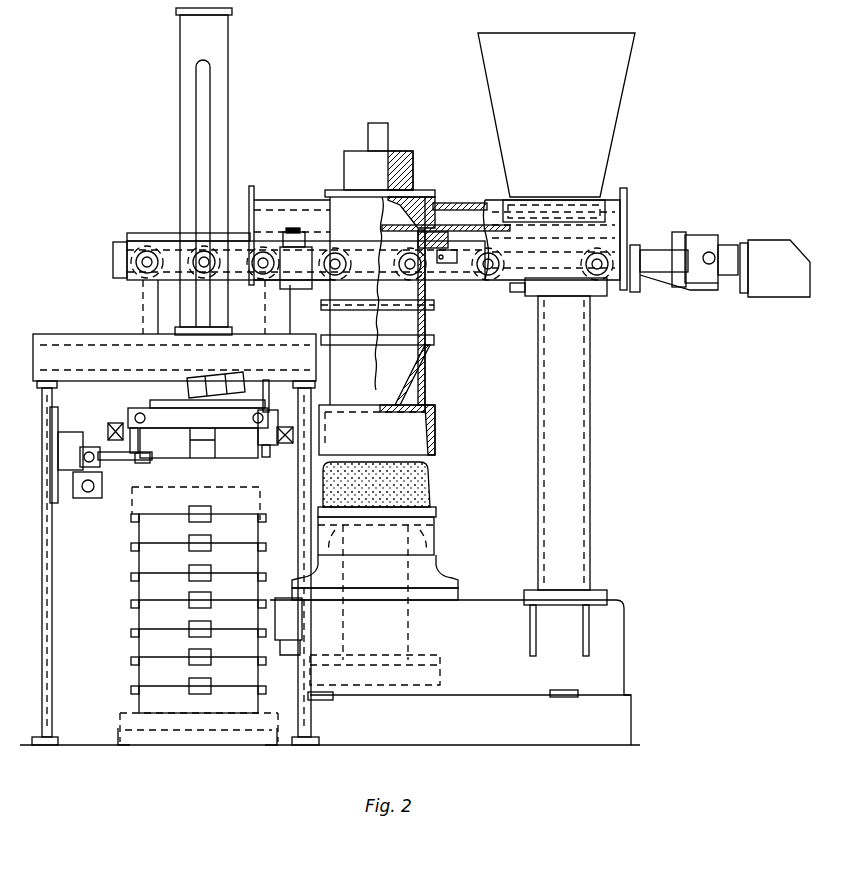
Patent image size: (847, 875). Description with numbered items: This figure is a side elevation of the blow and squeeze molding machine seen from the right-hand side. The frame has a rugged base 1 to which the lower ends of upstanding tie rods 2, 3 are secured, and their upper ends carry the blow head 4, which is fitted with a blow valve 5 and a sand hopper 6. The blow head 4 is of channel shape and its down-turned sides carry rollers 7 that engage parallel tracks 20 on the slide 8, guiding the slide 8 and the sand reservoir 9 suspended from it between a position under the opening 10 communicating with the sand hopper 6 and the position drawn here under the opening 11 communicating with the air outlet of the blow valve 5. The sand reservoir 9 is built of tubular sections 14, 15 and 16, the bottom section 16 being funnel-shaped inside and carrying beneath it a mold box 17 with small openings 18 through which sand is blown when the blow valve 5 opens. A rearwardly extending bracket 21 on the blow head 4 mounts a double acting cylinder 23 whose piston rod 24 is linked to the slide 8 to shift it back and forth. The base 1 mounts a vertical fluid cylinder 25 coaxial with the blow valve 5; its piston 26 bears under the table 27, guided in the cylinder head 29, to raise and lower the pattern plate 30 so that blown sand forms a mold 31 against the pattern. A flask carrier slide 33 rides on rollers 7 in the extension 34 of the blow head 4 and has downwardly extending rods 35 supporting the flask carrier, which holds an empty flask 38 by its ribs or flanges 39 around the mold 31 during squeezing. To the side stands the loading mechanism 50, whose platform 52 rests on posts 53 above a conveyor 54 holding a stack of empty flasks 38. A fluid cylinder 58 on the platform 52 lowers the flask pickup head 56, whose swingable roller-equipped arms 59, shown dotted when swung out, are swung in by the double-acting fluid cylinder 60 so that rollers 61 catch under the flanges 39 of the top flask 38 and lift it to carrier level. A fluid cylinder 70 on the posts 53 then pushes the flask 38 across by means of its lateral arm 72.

The base 1 is at (465, 722).
The tie rods 2 is at (290, 312).
The tie rods 3 is at (580, 401).
The blow head 4 is at (280, 200).
The blow valve 5 is at (366, 150).
The sand hopper 6 is at (612, 130).
The rollers 7 is at (135, 280).
The slide 8 is at (440, 228).
The sand reservoir 9 is at (428, 383).
The opening 10 is at (578, 200).
The opening 11 is at (420, 205).
The tubular section 14 is at (436, 255).
The tubular section 15 is at (432, 320).
The bottom section 16 is at (428, 352).
The mold box 17 is at (437, 433).
The openings 18 is at (383, 405).
The parallel tracks 20 is at (158, 242).
The bracket 21 is at (662, 250).
The double acting cylinder 23 is at (750, 243).
The piston rod 24 is at (455, 264).
The fluid cylinder 25 is at (460, 592).
The piston 26 is at (440, 635).
The table 27 is at (436, 524).
The cylinder head 29 is at (442, 568).
The pattern plate 30 is at (438, 511).
The mold 31 is at (432, 476).
The flask carrier slide 33 is at (134, 233).
The extension 34 is at (113, 266).
The rods 35 is at (140, 322).
The flask 38 is at (240, 448).
The ribs or flanges 39 is at (133, 516).
The loading mechanism 50 is at (53, 325).
The platform 52 is at (75, 334).
The posts 53 is at (52, 632).
The conveyor 54 is at (160, 728).
The flask pickup head 56 is at (268, 408).
The fluid cylinder 58 is at (181, 130).
The swingable roller-equipped arms 59 is at (112, 423).
The double-acting fluid cylinder 60 is at (238, 380).
The rollers 61 is at (133, 453).
The fluid cylinder 70 is at (80, 498).
The lateral arm 72 is at (144, 462).